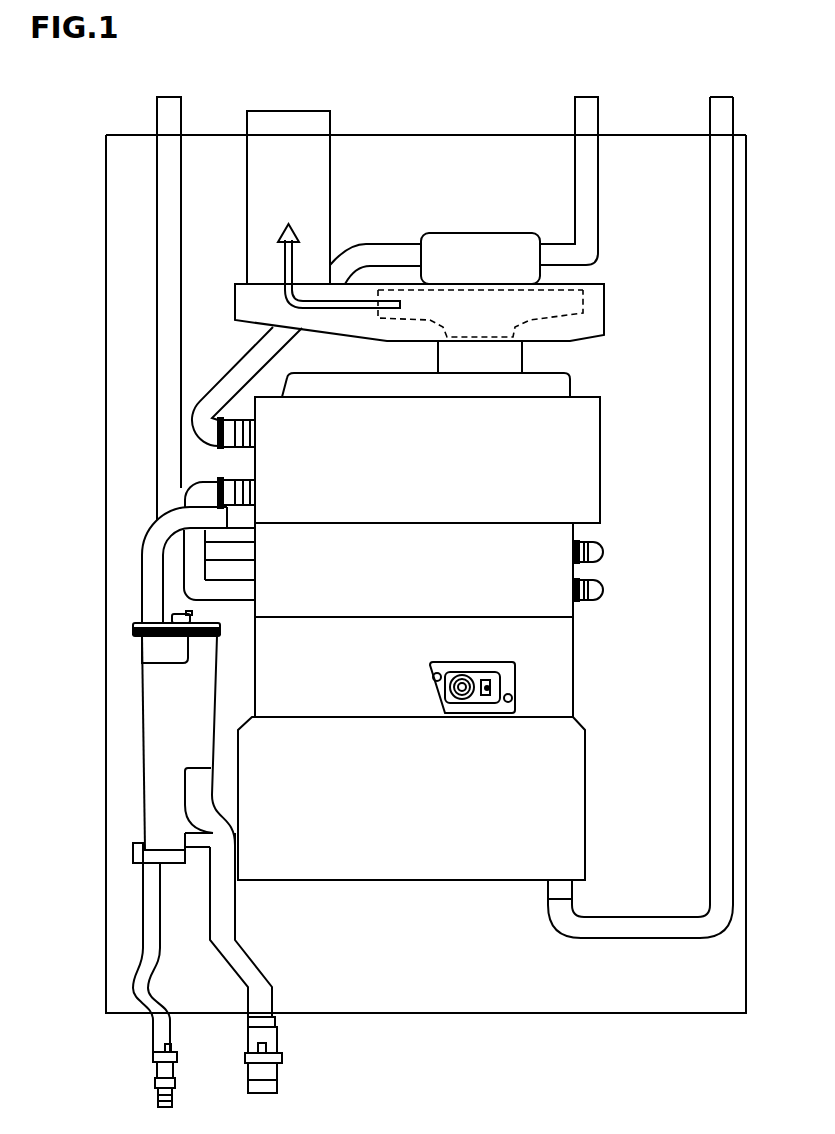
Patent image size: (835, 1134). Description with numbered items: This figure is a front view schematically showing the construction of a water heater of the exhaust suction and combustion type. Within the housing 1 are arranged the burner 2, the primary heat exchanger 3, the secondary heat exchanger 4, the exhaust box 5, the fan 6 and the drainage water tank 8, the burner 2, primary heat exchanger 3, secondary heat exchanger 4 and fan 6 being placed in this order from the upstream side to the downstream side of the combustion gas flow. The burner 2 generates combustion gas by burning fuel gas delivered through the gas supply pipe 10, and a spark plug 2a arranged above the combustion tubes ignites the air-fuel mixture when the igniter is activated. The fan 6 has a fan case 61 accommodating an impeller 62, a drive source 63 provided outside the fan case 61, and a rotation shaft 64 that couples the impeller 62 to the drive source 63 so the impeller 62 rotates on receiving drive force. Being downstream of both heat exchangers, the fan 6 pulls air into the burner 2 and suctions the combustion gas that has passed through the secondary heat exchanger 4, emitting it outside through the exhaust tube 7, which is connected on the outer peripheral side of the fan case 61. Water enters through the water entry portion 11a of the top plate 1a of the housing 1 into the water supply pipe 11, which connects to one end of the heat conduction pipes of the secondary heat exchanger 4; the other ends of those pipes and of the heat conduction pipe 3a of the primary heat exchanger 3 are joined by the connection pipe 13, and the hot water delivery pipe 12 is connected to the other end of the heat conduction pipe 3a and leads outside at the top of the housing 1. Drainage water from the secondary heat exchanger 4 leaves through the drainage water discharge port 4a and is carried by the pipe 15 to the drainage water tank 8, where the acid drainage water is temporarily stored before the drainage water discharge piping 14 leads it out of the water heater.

The housing 1 is at (760, 113).
The top plate 1a is at (688, 133).
The burner 2 is at (510, 840).
The spark plug 2a is at (460, 700).
The primary heat exchanger 3 is at (558, 610).
The heat conduction pipe 3a is at (603, 552).
The secondary heat exchanger 4 is at (583, 510).
The drainage water discharge port 4a is at (240, 518).
The exhaust box 5 is at (560, 380).
The fan 6 is at (449, 231).
The fan case 61 is at (593, 285).
The impeller 62 is at (550, 303).
The drive source 63 is at (457, 253).
The rotation shaft 64 is at (478, 290).
The exhaust tube 7 is at (246, 211).
The drainage water tank 8 is at (157, 715).
The gas supply pipe 10 is at (722, 97).
The water supply pipe 11 is at (584, 97).
The water entry portion 11a is at (587, 135).
The hot water delivery pipe 12 is at (168, 97).
The connection pipe 13 is at (198, 497).
The drainage water discharge piping 14 is at (225, 903).
The pipe 15 is at (155, 545).